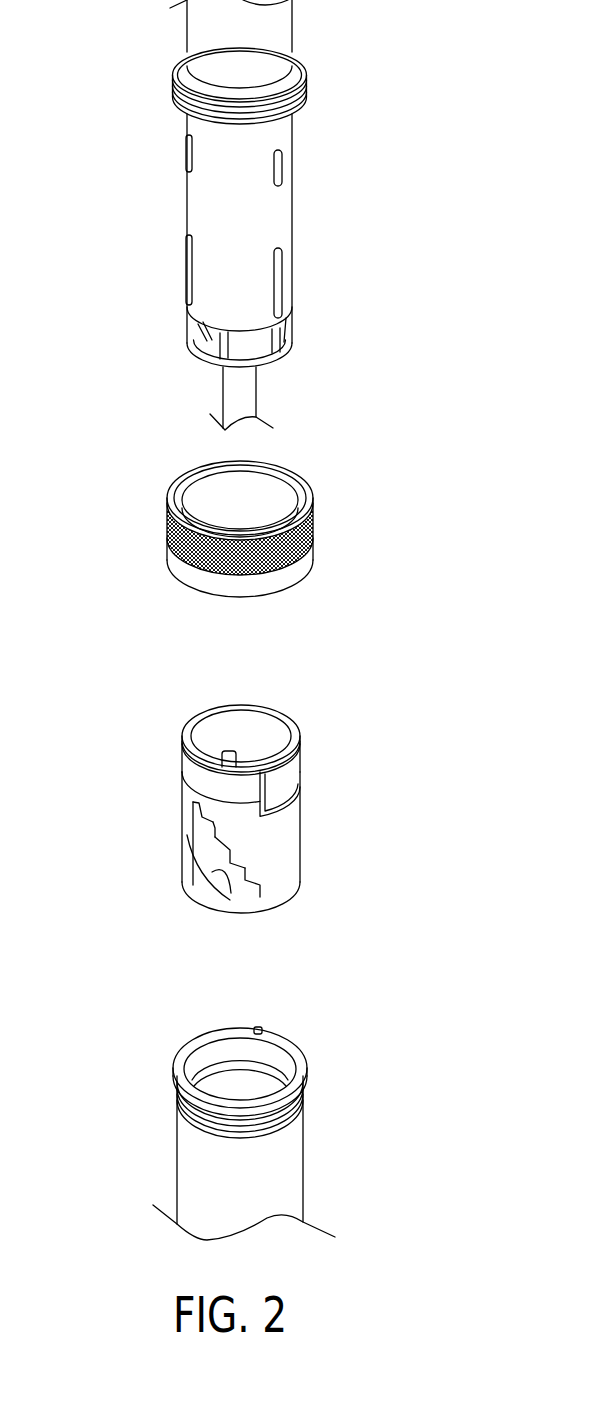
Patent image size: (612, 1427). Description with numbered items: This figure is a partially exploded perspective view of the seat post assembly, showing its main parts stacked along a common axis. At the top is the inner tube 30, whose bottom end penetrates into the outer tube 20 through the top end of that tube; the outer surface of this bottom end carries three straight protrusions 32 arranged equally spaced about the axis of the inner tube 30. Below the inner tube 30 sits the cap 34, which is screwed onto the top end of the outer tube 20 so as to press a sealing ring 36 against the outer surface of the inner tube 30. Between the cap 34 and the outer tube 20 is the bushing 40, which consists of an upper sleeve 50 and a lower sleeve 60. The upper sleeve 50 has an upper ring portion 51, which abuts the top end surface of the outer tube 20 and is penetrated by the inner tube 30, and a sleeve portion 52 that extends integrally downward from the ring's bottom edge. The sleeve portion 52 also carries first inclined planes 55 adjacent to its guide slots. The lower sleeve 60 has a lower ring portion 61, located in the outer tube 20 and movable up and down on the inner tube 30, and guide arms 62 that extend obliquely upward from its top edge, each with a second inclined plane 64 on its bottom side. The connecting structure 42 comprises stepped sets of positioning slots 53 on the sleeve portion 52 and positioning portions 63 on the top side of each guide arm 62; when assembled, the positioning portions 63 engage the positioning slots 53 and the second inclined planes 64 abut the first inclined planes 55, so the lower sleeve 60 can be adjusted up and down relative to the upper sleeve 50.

The outer tube 20 is at (290, 1176).
The inner tube 30 is at (277, 33).
The protrusions 32 is at (183, 162).
The cap 34 is at (312, 529).
The sealing ring 36 is at (307, 65).
The bushing 40 is at (245, 849).
The connecting structure 42 is at (115, 833).
The upper sleeve 50 is at (258, 758).
The upper ring portion 51 is at (183, 728).
The sleeve portion 52 is at (185, 790).
The positioning slots 53 is at (213, 832).
The first inclined planes 55 is at (225, 900).
The lower sleeve 60 is at (219, 885).
The lower ring portion 61 is at (270, 903).
The guide arms 62 is at (213, 857).
The positioning portions 63 is at (197, 805).
The second inclined plane 64 is at (208, 916).